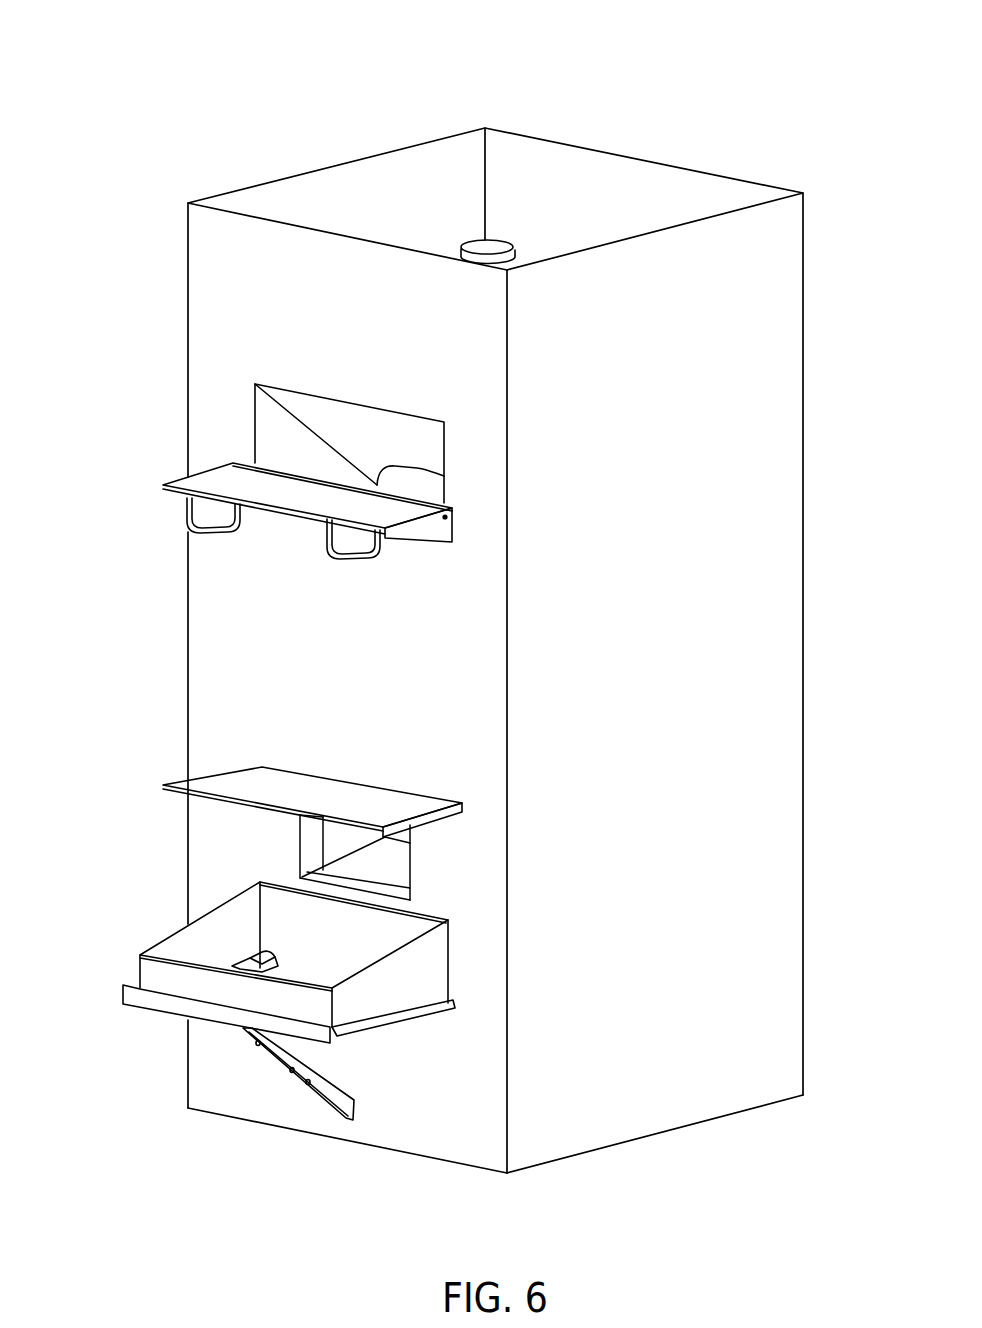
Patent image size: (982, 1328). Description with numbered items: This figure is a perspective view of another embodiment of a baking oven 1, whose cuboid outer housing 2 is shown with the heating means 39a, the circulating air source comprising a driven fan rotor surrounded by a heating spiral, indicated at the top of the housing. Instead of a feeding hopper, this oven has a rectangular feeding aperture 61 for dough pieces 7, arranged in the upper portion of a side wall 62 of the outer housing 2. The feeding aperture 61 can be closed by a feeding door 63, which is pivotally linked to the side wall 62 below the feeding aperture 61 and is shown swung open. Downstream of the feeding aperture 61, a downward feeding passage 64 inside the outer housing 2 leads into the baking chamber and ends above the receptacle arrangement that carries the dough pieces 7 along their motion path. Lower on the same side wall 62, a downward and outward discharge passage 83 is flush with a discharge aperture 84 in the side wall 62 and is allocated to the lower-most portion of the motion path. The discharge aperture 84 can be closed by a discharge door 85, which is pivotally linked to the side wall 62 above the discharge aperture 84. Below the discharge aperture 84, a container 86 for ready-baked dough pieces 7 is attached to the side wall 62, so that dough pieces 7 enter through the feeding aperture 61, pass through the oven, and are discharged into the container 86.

The baking oven 1 is at (623, 138).
The outer housing 2 is at (770, 316).
The heating means 39a is at (500, 247).
The feeding aperture 61 is at (330, 402).
The side wall 62 is at (203, 582).
The feeding door 63 is at (280, 492).
The feeding passage 64 is at (388, 443).
The dough pieces 7 is at (253, 963).
The discharge passage 83 is at (340, 837).
The discharge aperture 84 is at (307, 849).
The discharge door 85 is at (337, 803).
The container 86 is at (232, 920).